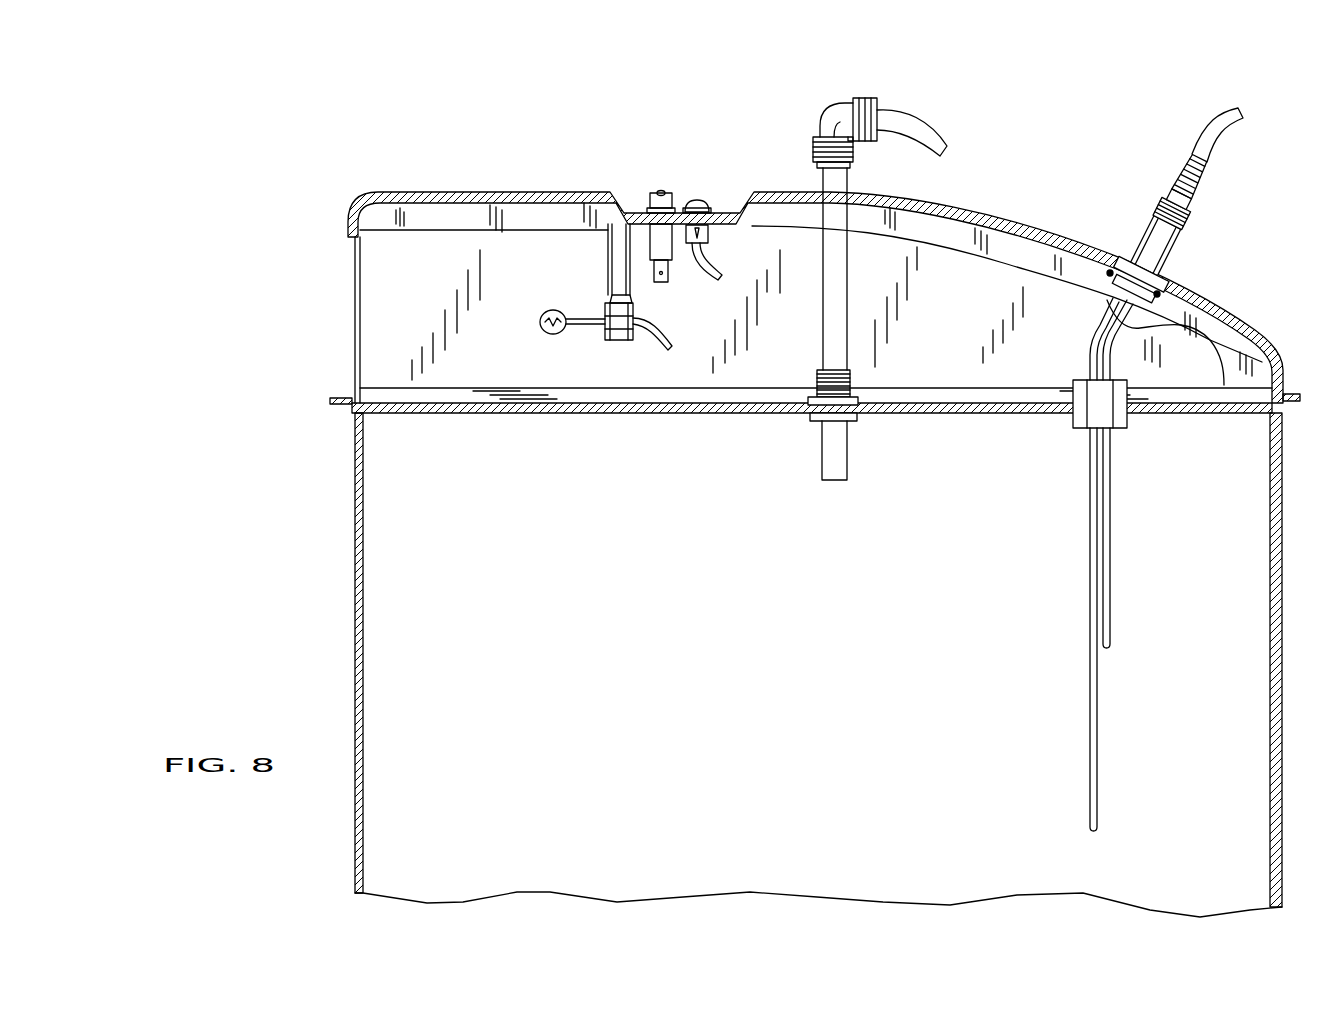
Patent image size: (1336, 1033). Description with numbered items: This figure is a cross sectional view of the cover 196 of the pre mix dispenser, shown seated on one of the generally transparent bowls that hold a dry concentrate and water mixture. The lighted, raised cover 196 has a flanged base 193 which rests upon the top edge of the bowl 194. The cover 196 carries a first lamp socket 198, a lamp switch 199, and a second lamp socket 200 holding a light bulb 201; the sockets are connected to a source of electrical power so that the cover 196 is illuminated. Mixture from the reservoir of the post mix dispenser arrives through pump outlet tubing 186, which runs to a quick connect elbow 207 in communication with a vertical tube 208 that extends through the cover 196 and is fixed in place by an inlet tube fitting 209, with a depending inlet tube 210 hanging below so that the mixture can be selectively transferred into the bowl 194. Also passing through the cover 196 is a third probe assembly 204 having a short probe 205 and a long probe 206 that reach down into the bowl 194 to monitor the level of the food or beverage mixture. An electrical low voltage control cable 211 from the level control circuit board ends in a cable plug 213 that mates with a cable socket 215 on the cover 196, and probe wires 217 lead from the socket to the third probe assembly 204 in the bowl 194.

The pump outlet tubing 186 is at (930, 123).
The flanged base 193 is at (455, 410).
The bowl 194 is at (352, 555).
The cover 196 is at (393, 190).
The first lamp socket 198 is at (700, 200).
The lamp switch 199 is at (655, 193).
The second lamp socket 200 is at (612, 345).
The light bulb 201 is at (545, 308).
The third probe assembly 204 is at (1078, 430).
The short probe 205 is at (1110, 590).
The long probe 206 is at (1092, 757).
The quick connect elbow 207 is at (820, 123).
The vertical tube 208 is at (823, 285).
The inlet tube fitting 209 is at (817, 425).
The depending inlet tube 210 is at (837, 477).
The electrical low voltage control cable 211 is at (1230, 130).
The cable plug 213 is at (1150, 205).
The cable socket 215 is at (1115, 280).
The probe wires 217 is at (1137, 328).